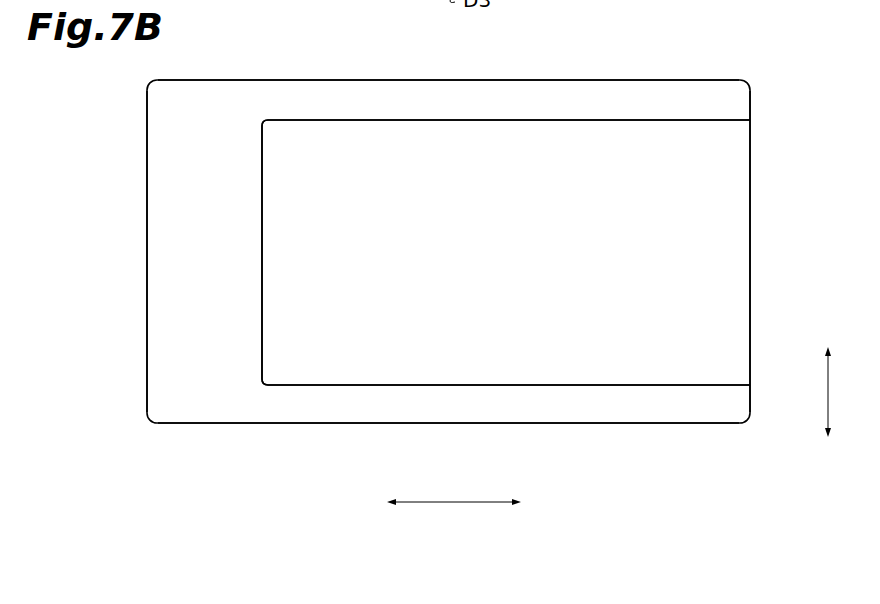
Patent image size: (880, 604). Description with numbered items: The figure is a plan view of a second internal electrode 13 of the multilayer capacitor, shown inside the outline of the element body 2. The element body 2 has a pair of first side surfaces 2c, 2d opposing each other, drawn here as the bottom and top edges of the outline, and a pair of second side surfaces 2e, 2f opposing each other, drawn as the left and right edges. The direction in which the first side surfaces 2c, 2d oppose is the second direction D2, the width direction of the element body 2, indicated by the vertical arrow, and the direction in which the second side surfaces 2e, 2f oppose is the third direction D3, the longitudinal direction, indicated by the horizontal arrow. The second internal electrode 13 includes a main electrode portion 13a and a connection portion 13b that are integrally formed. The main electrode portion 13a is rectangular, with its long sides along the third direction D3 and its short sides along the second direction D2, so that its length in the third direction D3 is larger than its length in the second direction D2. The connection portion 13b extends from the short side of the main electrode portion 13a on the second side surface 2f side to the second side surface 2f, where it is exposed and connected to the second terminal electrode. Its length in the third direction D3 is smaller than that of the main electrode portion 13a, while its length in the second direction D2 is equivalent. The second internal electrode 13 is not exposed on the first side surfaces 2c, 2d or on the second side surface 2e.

The element body 2 is at (210, 393).
The first side surface 2c is at (536, 424).
The first side surface 2d is at (397, 80).
The second side surface 2e is at (147, 315).
The second side surface 2f is at (752, 299).
The second internal electrode 13 is at (625, 385).
The main electrode portion 13a is at (390, 327).
The connection portion 13b is at (713, 188).
The second direction D2 is at (828, 398).
The third direction D3 is at (446, 503).